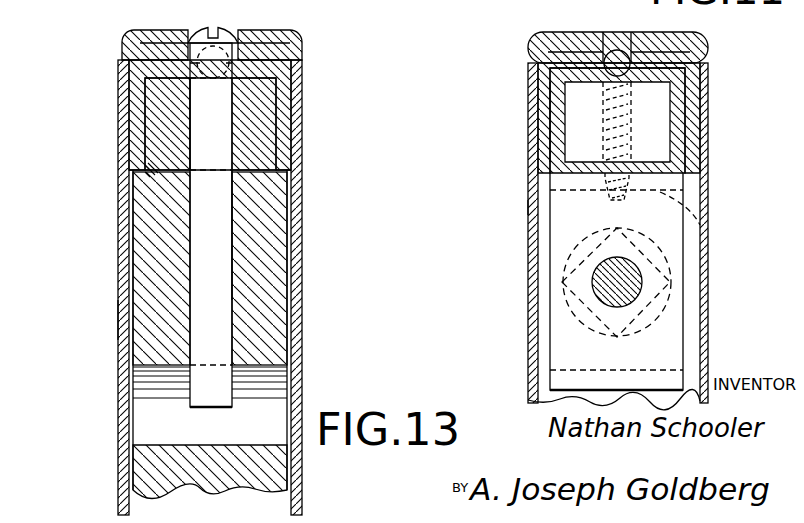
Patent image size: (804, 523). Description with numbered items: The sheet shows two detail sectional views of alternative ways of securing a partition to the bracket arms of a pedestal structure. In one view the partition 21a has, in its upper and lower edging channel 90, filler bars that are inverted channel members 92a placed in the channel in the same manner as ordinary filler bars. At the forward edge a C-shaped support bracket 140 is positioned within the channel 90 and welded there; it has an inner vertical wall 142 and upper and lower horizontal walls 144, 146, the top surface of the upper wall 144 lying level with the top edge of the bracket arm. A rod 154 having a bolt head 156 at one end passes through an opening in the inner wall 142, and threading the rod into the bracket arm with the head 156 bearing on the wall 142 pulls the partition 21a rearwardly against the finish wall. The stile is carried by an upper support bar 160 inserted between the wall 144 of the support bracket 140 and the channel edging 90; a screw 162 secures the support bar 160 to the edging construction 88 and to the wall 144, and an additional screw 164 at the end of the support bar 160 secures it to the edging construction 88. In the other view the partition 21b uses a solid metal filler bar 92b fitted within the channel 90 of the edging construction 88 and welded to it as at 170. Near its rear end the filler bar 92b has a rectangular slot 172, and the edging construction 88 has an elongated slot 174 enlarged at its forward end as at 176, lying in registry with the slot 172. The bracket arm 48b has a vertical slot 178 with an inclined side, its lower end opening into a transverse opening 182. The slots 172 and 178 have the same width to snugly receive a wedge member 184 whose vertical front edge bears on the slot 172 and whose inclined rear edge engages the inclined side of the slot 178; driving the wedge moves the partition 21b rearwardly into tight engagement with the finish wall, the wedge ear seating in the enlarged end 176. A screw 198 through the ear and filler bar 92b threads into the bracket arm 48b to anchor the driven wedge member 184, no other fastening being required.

In FIG. 11, the partition 21a is at (527, 205).
In FIG. 13, the partition 21b is at (117, 323).
In FIG. 13, the bracket arm 48b is at (263, 305).
In FIG. 13, the edging construction 88 is at (135, 36).
In FIG. 11, the edging construction 88 is at (555, 40).
In FIG. 13, the channel 90 is at (286, 146).
In FIG. 11, the channel 90 is at (685, 143).
In FIG. 11, the inverted channel member 92a is at (558, 142).
In FIG. 13, the filler bar 92b is at (268, 120).
In FIG. 11, the support bracket 140 is at (567, 238).
In FIG. 11, the inner vertical wall 142 is at (558, 325).
In FIG. 11, the upper horizontal wall 144 is at (685, 235).
In FIG. 11, the lower horizontal wall 146 is at (667, 367).
In FIG. 11, the rod 154 is at (612, 300).
In FIG. 11, the bolt head 156 is at (648, 260).
In FIG. 11, the support bar 160 is at (653, 113).
In FIG. 11, the screw 162 is at (592, 201).
In FIG. 11, the additional screw 164 is at (565, 104).
In FIG. 13, the weld 170 is at (150, 168).
In FIG. 13, the rectangular slot 172 is at (190, 120).
In FIG. 13, the elongated slot 174 is at (183, 72).
In FIG. 13, the enlarged end 176 is at (190, 12).
In FIG. 13, the vertical slot 178 is at (190, 243).
In FIG. 13, the transverse opening 182 is at (155, 415).
In FIG. 13, the wedge member 184 is at (215, 222).
In FIG. 13, the screw 198 is at (222, 30).